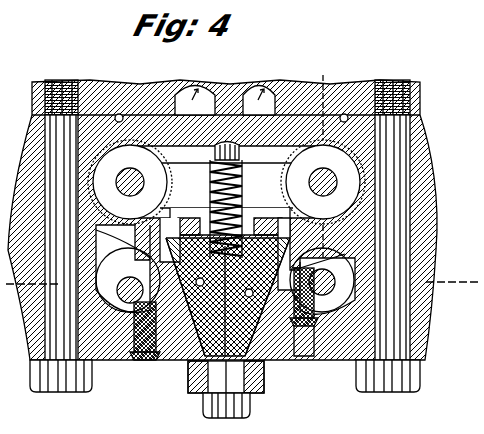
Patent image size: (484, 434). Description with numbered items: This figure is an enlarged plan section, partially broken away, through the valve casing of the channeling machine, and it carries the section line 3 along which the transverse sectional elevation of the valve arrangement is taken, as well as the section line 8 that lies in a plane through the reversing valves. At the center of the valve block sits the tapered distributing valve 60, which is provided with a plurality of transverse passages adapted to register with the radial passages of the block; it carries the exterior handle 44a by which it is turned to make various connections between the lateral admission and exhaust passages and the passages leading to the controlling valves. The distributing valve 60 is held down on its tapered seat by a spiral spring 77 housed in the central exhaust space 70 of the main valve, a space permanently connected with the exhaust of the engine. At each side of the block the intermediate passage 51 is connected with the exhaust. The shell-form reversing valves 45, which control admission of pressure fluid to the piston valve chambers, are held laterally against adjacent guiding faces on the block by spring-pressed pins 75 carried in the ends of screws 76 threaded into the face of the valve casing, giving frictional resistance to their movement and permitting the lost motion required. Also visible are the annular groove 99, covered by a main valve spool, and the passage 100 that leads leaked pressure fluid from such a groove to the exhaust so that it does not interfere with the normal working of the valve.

The section line 3— 3 is at (326, 72).
The section line 8— 8 is at (241, 275).
The exterior handle 44a is at (262, 388).
The reversing valve 45 is at (142, 298).
The intermediate passage 51 is at (244, 196).
The distributing valve 60 is at (205, 360).
The central exhaust space 70 is at (226, 182).
The spring-pressed pin 75 is at (318, 294).
The screw 76 is at (140, 358).
The spiral spring 77 is at (210, 200).
The annular groove 99 is at (145, 115).
The passage to exhaust 100 is at (119, 114).